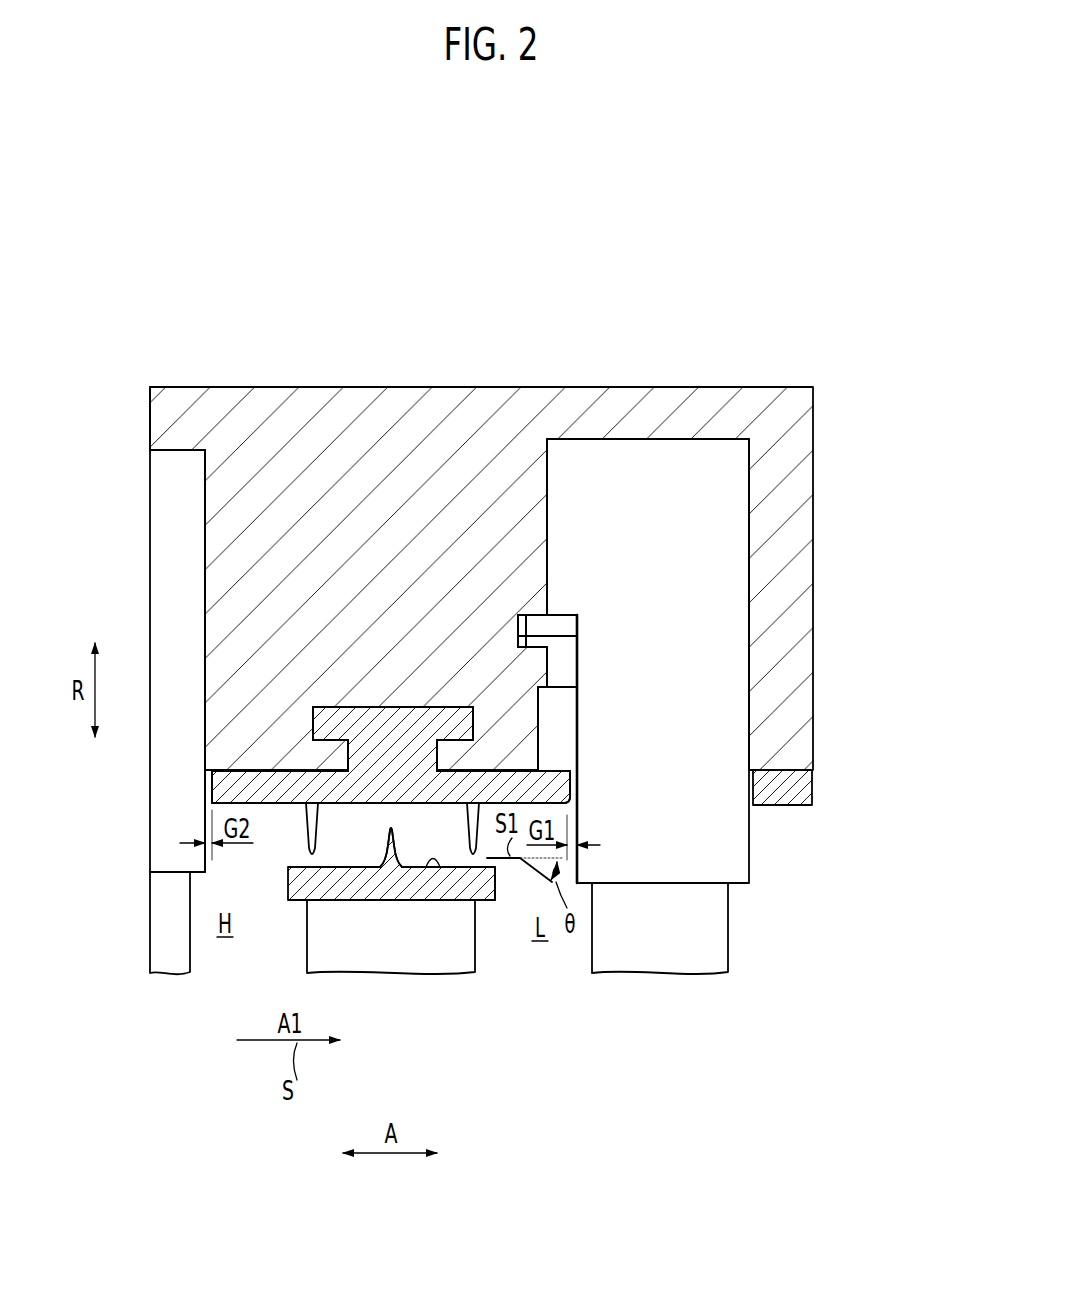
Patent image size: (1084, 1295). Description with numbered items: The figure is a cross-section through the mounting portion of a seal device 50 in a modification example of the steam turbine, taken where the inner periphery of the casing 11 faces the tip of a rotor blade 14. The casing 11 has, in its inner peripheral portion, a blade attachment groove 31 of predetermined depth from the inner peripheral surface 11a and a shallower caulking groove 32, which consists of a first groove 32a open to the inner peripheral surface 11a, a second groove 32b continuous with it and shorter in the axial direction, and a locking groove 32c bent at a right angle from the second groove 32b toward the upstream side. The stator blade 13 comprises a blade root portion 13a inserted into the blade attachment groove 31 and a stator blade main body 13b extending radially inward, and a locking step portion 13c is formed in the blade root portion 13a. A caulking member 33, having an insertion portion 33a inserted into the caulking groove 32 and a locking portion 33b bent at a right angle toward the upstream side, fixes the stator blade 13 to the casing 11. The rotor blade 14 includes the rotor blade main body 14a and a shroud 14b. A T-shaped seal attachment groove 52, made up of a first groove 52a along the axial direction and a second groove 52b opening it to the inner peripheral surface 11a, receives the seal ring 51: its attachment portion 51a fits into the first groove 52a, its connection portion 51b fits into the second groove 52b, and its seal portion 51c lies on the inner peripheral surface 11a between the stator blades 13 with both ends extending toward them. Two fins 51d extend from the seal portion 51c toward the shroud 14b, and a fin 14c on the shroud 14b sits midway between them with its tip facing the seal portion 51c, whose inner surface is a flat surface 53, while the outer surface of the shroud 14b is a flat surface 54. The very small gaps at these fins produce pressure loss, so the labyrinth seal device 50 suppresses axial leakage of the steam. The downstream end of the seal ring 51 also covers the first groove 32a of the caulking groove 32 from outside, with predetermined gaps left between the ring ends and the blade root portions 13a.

The casing 11 is at (280, 428).
The inner peripheral surface 11a is at (210, 789).
The stator blade 13 is at (196, 956).
The blade root portion 13a is at (172, 468).
The stator blade main body 13b is at (160, 927).
The locking step portion 13c is at (577, 625).
The rotor blade 14 is at (483, 958).
The rotor blade main body 14a is at (390, 960).
The shroud 14b is at (500, 890).
The fin 14c is at (386, 835).
The blade attachment groove 31 is at (197, 458).
The caulking groove 32 is at (886, 670).
The first groove 32a is at (538, 727).
The second groove 32b is at (547, 677).
The locking groove 32c is at (577, 636).
The caulking member 33 is at (480, 318).
The insertion portion 33a is at (555, 658).
The locking portion 33b is at (535, 640).
The seal device 50 is at (777, 809).
The seal ring 51 is at (398, 697).
The attachment portion 51a is at (423, 757).
The connection portion 51b is at (442, 722).
The seal portion 51c is at (213, 794).
The fins 51d is at (318, 840).
The seal attachment groove 52 is at (298, 318).
The first groove 52a is at (333, 705).
The second groove 52b is at (350, 758).
The flat surface 53 is at (268, 808).
The flat surface 54 is at (440, 864).